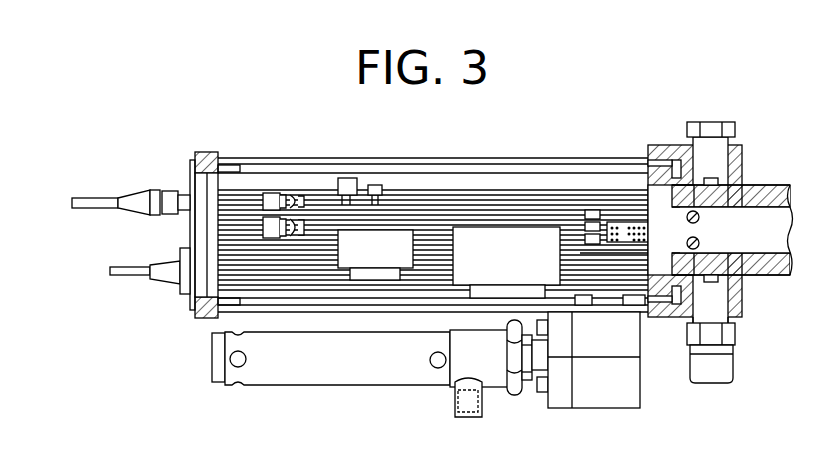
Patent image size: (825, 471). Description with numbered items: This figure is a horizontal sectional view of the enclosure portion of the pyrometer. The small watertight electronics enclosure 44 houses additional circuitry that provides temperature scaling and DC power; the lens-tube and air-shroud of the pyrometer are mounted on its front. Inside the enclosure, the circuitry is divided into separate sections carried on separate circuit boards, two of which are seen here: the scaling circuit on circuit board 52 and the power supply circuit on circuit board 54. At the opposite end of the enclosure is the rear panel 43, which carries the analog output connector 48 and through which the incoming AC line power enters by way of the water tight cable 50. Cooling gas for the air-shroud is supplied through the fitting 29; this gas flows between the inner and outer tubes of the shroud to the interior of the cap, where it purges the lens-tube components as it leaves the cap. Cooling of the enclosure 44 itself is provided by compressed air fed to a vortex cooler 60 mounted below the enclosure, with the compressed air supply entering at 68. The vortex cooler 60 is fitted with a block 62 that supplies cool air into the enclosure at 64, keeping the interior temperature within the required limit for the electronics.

The fitting 29 is at (714, 355).
The rear panel 43 is at (196, 318).
The electronics enclosure 44 is at (268, 160).
The analog output connector 48 is at (141, 201).
The water tight cable 50 is at (127, 276).
The circuit board 52 is at (428, 160).
The circuit board 54 is at (502, 226).
The vortex cooler 60 is at (357, 378).
The block 62 is at (598, 399).
The cool air supply 64 is at (602, 288).
The air supply 68 is at (466, 411).